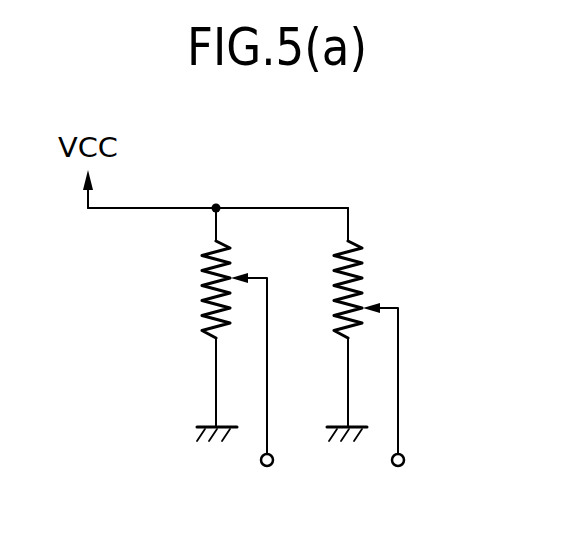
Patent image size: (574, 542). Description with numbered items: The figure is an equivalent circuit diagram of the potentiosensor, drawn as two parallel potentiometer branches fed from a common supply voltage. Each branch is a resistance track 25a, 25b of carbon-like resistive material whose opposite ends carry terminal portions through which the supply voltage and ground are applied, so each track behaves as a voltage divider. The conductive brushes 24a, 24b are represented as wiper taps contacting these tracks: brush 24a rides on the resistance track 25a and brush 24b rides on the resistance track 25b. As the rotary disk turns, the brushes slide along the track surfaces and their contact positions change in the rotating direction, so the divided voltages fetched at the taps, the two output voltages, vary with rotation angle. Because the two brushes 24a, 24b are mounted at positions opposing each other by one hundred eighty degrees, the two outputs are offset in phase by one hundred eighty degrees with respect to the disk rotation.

The conductive brush 24a is at (258, 272).
The resistance track 25a is at (205, 286).
The conductive brush 24b is at (400, 338).
The resistance track 25b is at (365, 262).